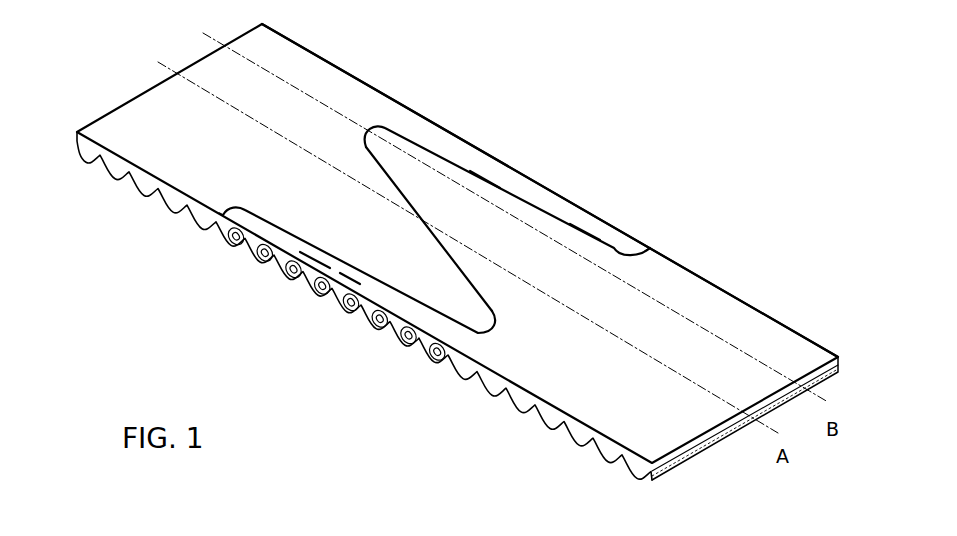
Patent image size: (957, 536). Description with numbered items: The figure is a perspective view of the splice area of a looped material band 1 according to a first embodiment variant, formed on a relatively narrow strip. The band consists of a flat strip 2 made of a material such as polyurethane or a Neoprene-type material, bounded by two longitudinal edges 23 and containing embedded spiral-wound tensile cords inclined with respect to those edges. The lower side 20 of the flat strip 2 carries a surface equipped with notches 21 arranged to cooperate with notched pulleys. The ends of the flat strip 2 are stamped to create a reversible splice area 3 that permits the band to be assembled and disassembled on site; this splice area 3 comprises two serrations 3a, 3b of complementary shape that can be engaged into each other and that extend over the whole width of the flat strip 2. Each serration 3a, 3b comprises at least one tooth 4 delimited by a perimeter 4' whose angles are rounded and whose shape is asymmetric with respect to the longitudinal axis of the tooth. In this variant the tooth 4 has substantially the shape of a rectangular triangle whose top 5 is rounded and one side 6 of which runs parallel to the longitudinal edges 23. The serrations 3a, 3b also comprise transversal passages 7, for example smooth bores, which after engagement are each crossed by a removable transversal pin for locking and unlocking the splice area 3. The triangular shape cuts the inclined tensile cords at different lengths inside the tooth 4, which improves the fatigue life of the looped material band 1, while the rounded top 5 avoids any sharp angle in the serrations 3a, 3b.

The looped material band 1 is at (150, 57).
The flat strip 2 is at (573, 200).
The splice area 3 is at (652, 238).
The serration 3a is at (497, 173).
The serration 3b is at (257, 224).
The tooth 4 is at (493, 233).
The perimeter 4' is at (420, 234).
The top 5 is at (357, 130).
The side 6 is at (583, 232).
The transversal passage 7 is at (352, 303).
The lower side 20 is at (148, 201).
The notch 21 is at (508, 400).
The longitudinal edge 23 is at (727, 292).